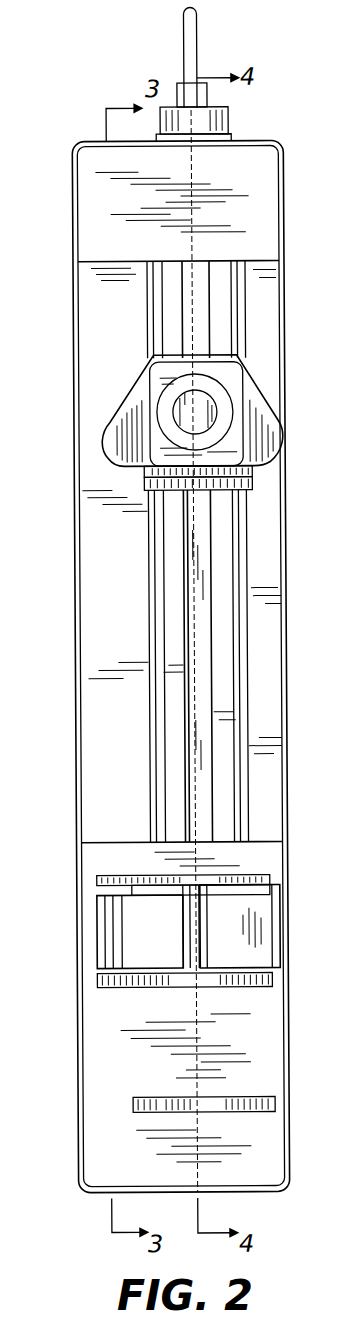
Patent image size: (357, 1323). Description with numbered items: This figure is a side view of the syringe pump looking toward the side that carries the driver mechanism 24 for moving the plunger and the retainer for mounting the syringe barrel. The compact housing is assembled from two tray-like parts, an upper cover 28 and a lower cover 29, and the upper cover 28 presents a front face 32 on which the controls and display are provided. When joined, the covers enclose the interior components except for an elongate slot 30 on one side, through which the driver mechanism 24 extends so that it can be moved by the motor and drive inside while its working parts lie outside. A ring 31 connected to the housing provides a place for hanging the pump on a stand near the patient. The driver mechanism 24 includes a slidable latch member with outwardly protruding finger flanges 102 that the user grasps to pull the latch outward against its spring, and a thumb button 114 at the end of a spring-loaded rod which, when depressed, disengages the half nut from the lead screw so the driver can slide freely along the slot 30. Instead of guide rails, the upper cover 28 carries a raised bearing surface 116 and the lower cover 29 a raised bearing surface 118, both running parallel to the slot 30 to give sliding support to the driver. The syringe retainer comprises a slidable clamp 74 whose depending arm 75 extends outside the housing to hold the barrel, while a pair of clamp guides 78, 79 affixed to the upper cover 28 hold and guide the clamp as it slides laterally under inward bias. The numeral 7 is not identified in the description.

The driver mechanism 24 is at (262, 374).
The upper cover 28 is at (88, 1045).
The lower cover 29 is at (258, 1047).
The elongate slot 30 is at (187, 312).
The ring 31 is at (184, 12).
The front face 32 is at (72, 275).
The slidable clamp 74 is at (255, 927).
The depending arm 75 is at (115, 923).
The clamp guide 78 is at (110, 880).
The clamp guide 79 is at (110, 985).
The finger flanges 102 is at (115, 433).
The thumb button 114 is at (172, 397).
The raised bearing surface 116 is at (165, 745).
The raised bearing surface 118 is at (222, 793).
The unidentified part 7 is at (353, 532).